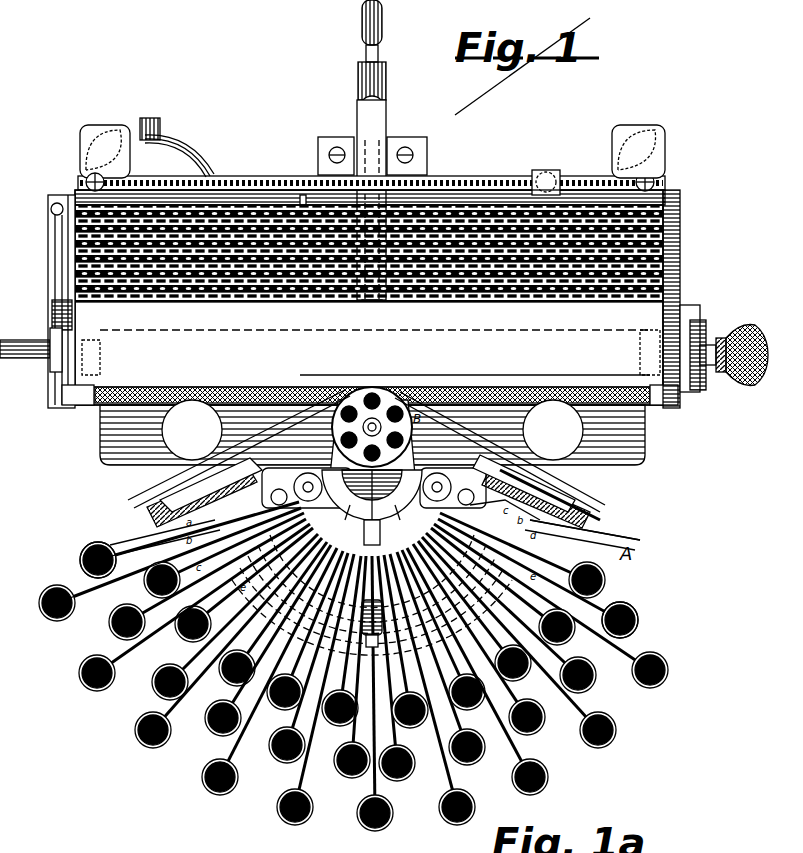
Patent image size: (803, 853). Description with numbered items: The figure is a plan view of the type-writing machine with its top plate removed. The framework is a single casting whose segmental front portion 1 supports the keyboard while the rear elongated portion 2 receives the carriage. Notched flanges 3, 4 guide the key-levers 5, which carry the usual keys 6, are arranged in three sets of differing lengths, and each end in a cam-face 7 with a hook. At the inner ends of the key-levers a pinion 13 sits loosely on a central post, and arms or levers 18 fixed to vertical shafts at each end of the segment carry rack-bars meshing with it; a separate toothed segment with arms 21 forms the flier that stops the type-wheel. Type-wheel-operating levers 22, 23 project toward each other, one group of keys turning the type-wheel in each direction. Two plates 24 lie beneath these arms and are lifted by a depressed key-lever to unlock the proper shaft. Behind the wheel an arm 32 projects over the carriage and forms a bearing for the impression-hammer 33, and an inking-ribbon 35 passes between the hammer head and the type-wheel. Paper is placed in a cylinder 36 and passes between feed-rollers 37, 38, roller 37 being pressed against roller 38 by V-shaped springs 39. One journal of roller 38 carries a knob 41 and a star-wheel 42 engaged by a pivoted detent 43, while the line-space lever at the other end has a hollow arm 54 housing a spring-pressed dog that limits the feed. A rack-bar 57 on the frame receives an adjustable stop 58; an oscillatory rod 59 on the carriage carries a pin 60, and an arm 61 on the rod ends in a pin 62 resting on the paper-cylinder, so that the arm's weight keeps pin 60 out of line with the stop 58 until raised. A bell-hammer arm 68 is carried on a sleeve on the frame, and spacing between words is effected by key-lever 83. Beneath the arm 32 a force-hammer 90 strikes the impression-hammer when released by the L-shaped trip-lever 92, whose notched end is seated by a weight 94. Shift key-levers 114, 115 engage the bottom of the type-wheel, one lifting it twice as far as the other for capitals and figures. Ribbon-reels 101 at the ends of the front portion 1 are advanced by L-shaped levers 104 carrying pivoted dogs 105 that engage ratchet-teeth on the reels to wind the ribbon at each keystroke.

The segmental front portion 1 is at (585, 530).
The rear elongated portion 2 is at (640, 460).
The segmental notched flange 3 is at (548, 540).
The segmental notched flange 4 is at (505, 510).
The key-lever 5 is at (353, 666).
The key 6 is at (359, 678).
The cam-face 7 is at (388, 640).
The pinion 13 is at (372, 500).
The arm or lever 18 is at (372, 506).
The flier arm 21 is at (372, 483).
The type-wheel-operating lever 22 is at (403, 523).
The type-wheel-operating lever 23 is at (344, 519).
The plate 24 is at (374, 470).
The arm 32 is at (360, 290).
The impression-hammer 33 is at (400, 136).
The inking-ribbon 35 is at (560, 498).
The paper-cylinder 36 is at (75, 250).
The feed-roller 37 is at (462, 388).
The feed-roller 38 is at (278, 331).
The spring 39 is at (85, 406).
The knob 41 is at (742, 367).
The star-wheel 42 is at (702, 348).
The detent 43 is at (696, 318).
The hollow arm 54 is at (22, 358).
The rack-bar 57 is at (370, 178).
The adjustable stop 58 is at (546, 173).
The oscillatory rod 59 is at (450, 205).
The pin 60 is at (303, 196).
The arm 61 is at (48, 283).
The pin 62 is at (60, 325).
The bell-hammer arm 68 is at (147, 147).
The space key-lever 83 is at (380, 792).
The force-hammer 90 is at (378, 33).
The trip-lever 92 is at (362, 85).
The weight 94 is at (386, 108).
The ribbon-reel 101 is at (606, 498).
The L-shaped lever 104 is at (366, 451).
The dog 105 is at (367, 483).
The shift key-lever 114 is at (162, 535).
The shift key-lever 115 is at (179, 560).